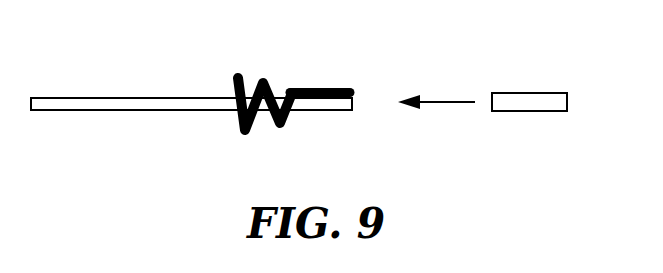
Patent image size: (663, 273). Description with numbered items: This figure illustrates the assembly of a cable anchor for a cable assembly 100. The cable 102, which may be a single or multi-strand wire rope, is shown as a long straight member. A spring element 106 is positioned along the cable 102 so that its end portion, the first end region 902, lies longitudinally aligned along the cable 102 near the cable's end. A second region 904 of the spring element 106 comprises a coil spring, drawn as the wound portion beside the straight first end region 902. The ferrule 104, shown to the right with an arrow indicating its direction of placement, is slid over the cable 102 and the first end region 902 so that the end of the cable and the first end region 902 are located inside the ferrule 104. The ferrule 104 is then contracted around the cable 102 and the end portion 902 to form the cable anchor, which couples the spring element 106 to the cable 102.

The cable assembly 100 is at (163, 167).
The cable 102 is at (86, 97).
The ferrule 104 is at (533, 93).
The spring element 106 is at (233, 77).
The first end region 902 is at (355, 83).
The second region 904 is at (295, 140).